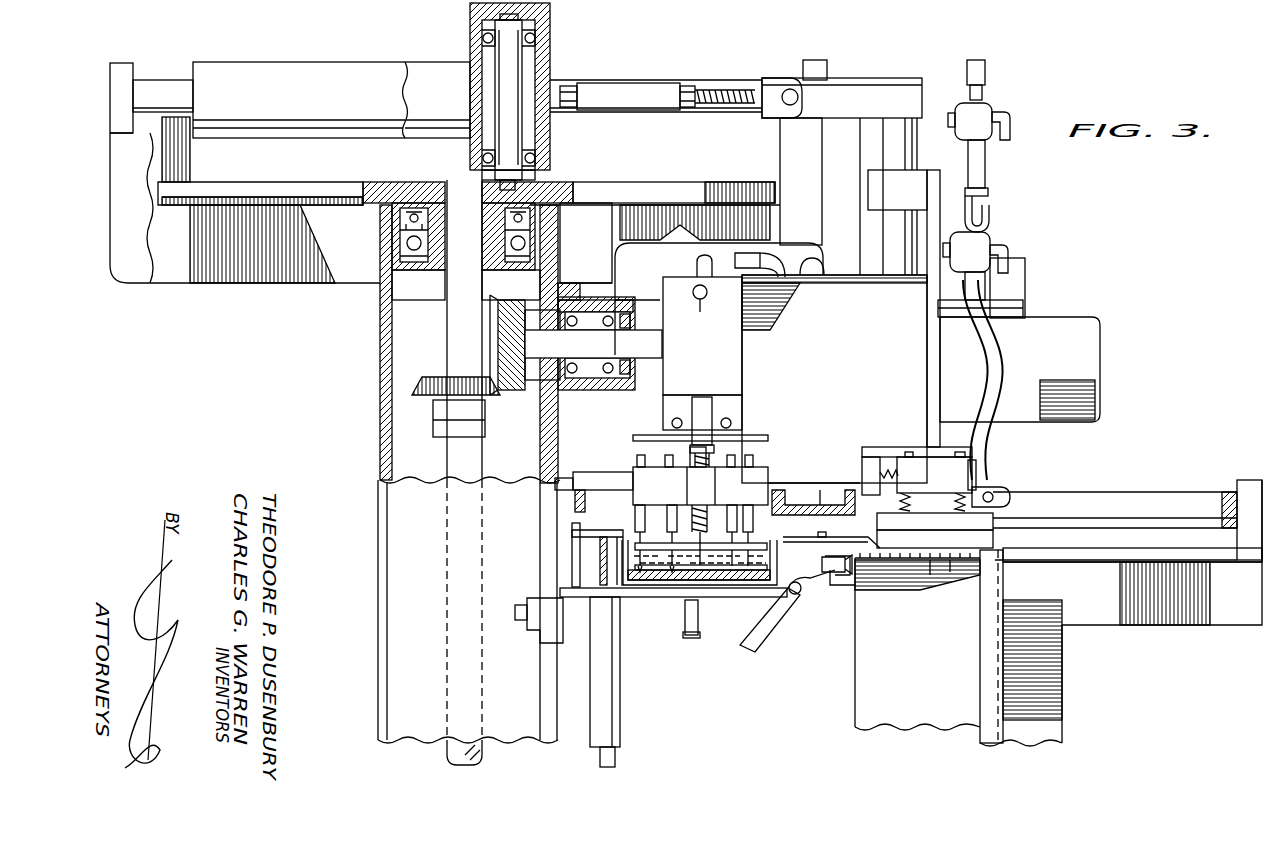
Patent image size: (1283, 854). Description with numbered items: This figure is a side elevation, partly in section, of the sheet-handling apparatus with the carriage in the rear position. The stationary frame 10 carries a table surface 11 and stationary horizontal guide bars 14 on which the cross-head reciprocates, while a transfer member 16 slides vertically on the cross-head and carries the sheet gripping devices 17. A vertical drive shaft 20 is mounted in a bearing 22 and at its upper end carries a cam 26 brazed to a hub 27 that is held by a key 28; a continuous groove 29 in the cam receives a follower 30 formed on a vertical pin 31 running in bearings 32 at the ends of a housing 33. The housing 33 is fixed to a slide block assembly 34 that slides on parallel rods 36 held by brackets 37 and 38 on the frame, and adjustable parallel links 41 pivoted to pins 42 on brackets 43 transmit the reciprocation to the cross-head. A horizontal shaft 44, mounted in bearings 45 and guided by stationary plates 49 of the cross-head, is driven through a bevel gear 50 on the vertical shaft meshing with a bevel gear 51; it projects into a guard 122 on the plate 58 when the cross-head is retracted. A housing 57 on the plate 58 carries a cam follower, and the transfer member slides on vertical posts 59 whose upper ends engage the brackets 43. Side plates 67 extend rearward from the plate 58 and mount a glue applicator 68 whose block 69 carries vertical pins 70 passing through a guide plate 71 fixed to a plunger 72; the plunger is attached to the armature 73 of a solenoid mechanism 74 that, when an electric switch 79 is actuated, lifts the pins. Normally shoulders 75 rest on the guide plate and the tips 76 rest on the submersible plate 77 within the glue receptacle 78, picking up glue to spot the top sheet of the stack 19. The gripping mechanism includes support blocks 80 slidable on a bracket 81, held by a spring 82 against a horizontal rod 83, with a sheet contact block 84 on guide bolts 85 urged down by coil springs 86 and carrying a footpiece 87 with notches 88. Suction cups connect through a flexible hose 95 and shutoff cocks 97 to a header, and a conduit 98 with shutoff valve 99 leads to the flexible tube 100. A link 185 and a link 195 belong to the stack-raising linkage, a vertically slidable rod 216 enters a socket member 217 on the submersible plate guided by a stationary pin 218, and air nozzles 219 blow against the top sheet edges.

The stationary frame 10 is at (222, 290).
The table surface 11 is at (1213, 555).
The horizontal guide bars 14 is at (1232, 500).
The transfer member 16 is at (912, 378).
The sheet gripping devices 17 is at (962, 462).
The stack of sheets 19 is at (868, 690).
The vertical drive shaft 20 is at (460, 340).
The bearing 22 is at (405, 262).
The cam 26 is at (666, 186).
The hub 27 is at (433, 195).
The key 28 is at (443, 275).
The groove 29 is at (515, 190).
The follower 30 is at (532, 175).
The vertical pin 31 is at (522, 62).
The bearings 32 is at (536, 40).
The housing 33 is at (478, 42).
The slide block assembly 34 is at (288, 60).
The parallel rods 36 is at (165, 80).
The bracket 37 is at (121, 63).
The bracket 38 is at (816, 60).
The parallel links 41 is at (640, 83).
The pins 42 is at (787, 88).
The brackets 43 is at (872, 82).
The horizontal shaft 44 is at (641, 302).
The bearings 45 is at (605, 382).
The stationary plates 49 is at (824, 220).
The bevel gear 50 is at (455, 424).
The bevel gear 51 is at (538, 312).
The housing 57 is at (1025, 278).
The plate 58 is at (935, 182).
The vertical posts 59 is at (905, 152).
The side plates 67 is at (835, 290).
The glue applicator 68 is at (762, 456).
The block 69 is at (768, 475).
The vertical pins 70 is at (668, 456).
The guide plate 71 is at (735, 550).
The plunger 72 is at (700, 505).
The armature 73 is at (713, 405).
The solenoid mechanism 74 is at (718, 375).
The shoulders 75 is at (645, 520).
The tips 76 is at (672, 566).
The submersible plate 77 is at (720, 570).
The glue receptacle 78 is at (670, 590).
The electric switch 79 is at (698, 308).
The support blocks 80 is at (962, 483).
The bracket 81 is at (900, 447).
The spring 82 is at (875, 458).
The horizontal rod 83 is at (978, 470).
The sheet contact block 84 is at (993, 520).
The guide bolts 85 is at (958, 510).
The coil springs 86 is at (905, 560).
The footpiece 87 is at (985, 565).
The notches 88 is at (950, 560).
The flexible hose 95 is at (997, 374).
The shutoff cocks 97 is at (985, 240).
The conduit 98 is at (988, 156).
The shutoff valve 99 is at (990, 110).
The flexible tube 100 is at (987, 68).
The guard 122 is at (1100, 337).
The link 185 is at (770, 610).
The link 195 is at (690, 640).
The vertically slidable rod 216 is at (606, 530).
The socket member 217 is at (600, 563).
The stationary pin 218 is at (573, 548).
The air nozzles 219 is at (836, 575).